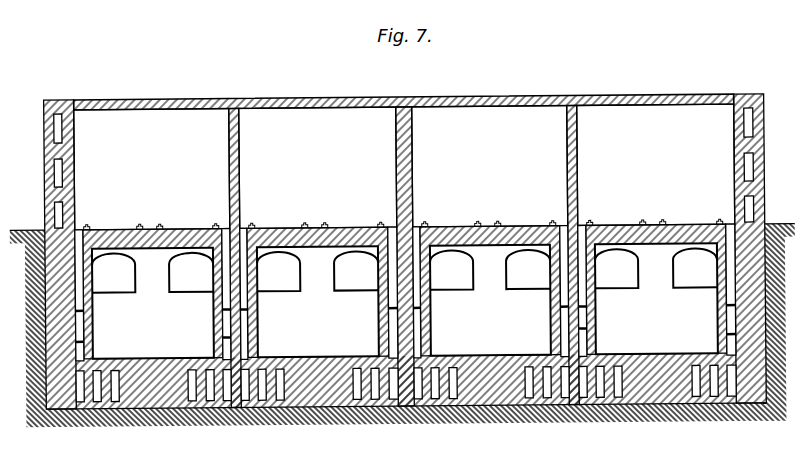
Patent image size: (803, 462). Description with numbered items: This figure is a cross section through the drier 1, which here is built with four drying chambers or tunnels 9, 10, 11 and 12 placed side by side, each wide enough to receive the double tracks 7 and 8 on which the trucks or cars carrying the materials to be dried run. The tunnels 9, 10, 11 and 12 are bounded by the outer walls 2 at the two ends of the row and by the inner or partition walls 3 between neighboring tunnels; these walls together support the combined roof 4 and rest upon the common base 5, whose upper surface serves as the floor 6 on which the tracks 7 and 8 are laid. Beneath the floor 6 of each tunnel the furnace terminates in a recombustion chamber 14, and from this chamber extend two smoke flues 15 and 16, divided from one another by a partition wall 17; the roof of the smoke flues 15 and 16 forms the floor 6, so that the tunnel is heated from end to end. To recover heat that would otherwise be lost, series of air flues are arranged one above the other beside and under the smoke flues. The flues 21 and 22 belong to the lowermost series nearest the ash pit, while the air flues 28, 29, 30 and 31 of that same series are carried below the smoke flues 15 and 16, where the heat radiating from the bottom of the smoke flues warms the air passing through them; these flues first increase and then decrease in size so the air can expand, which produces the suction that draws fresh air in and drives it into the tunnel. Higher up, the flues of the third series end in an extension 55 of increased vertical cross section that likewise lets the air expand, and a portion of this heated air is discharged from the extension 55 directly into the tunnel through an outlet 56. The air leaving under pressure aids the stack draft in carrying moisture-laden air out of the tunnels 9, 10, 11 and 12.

The drier 1 is at (402, 98).
The outer walls 2 is at (75, 167).
The inner or partition walls 3 is at (241, 161).
The roof 4 is at (378, 108).
The base 5 is at (322, 401).
The floor 6 is at (271, 228).
The track 7 is at (478, 223).
The track 8 is at (554, 223).
The drying chamber or tunnel 9 is at (138, 115).
The drying chamber or tunnel 10 is at (305, 111).
The drying chamber or tunnel 11 is at (473, 111).
The drying chamber or tunnel 12 is at (632, 110).
The recombustion chamber 14 is at (138, 249).
The smoke flue 15 is at (124, 286).
The smoke flue 16 is at (190, 286).
The partition wall 17 is at (318, 279).
The air flue 21 is at (114, 396).
The air flue 22 is at (191, 396).
The air flue 28 is at (80, 396).
The air flue 29 is at (96, 396).
The air flue 30 is at (209, 396).
The air flue 31 is at (226, 396).
The extension 55 is at (79, 339).
The outlet 56 is at (80, 227).